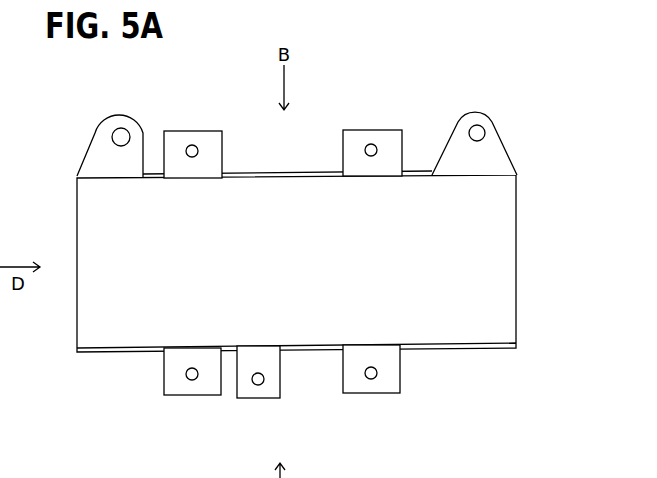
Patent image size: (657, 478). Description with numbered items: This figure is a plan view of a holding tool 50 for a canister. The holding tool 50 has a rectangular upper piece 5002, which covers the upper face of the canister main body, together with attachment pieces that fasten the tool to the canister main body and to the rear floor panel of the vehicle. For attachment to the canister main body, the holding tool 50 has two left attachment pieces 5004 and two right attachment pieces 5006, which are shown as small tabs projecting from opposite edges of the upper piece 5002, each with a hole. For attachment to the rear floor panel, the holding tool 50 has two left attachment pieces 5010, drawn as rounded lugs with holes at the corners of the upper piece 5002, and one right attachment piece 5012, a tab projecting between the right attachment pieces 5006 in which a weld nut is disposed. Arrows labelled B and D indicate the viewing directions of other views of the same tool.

The holding tool 50 is at (422, 62).
The upper piece 5002 is at (147, 228).
The left attachment piece 5004 is at (195, 130).
The right attachment piece 5006 is at (168, 380).
The left attachment piece 5010 is at (100, 138).
The right attachment piece 5012 is at (245, 398).